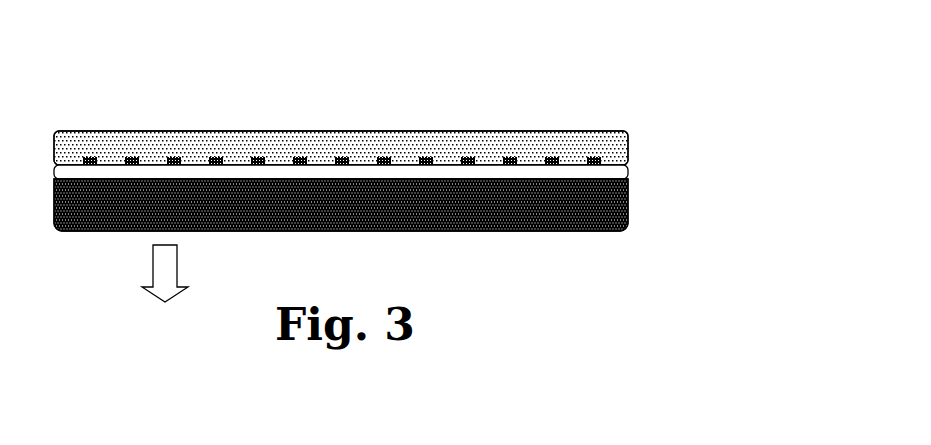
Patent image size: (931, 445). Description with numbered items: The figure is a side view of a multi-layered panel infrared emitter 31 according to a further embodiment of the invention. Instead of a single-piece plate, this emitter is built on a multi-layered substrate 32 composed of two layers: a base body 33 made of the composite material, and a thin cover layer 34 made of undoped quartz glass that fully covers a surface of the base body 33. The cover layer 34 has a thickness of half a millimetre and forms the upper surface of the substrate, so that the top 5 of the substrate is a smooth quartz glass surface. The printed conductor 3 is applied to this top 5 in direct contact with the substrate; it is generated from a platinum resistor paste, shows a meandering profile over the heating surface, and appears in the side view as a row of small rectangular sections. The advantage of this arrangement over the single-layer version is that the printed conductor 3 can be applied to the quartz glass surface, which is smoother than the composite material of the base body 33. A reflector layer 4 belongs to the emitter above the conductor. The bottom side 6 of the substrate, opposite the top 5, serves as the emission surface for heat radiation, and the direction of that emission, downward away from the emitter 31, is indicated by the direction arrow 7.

The infrared emitter 31 is at (113, 98).
The reflector layer 4 is at (157, 137).
The printed conductor 3 is at (270, 138).
The cover layer 34 is at (403, 172).
The top 5 is at (584, 111).
The multi-layered substrate 32 is at (644, 191).
The base body 33 is at (432, 221).
The bottom side 6 is at (501, 276).
The direction arrow 7 is at (170, 277).